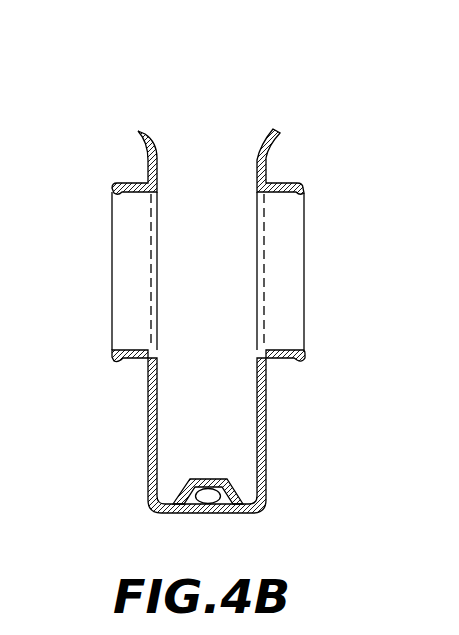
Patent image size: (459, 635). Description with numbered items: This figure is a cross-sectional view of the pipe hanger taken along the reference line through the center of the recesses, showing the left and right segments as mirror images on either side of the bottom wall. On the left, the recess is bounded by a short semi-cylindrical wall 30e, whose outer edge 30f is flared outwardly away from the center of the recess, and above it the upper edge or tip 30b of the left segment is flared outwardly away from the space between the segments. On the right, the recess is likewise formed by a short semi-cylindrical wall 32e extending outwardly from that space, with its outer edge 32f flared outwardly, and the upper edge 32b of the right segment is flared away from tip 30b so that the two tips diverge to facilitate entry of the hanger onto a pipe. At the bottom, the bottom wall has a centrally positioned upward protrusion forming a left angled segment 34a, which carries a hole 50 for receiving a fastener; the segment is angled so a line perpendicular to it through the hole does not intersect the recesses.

The tip of the left segment 30b is at (143, 133).
The semi-cylindrical wall 30e is at (128, 183).
The outer edge of the wall 30f is at (112, 183).
The upper edge of the right segment 32b is at (276, 132).
The semi-cylindrical wall 32e is at (273, 183).
The outer edge of the right semi-cylindrical wall 32f is at (306, 187).
The left angled segment 34a is at (187, 497).
The hole 50 is at (210, 500).